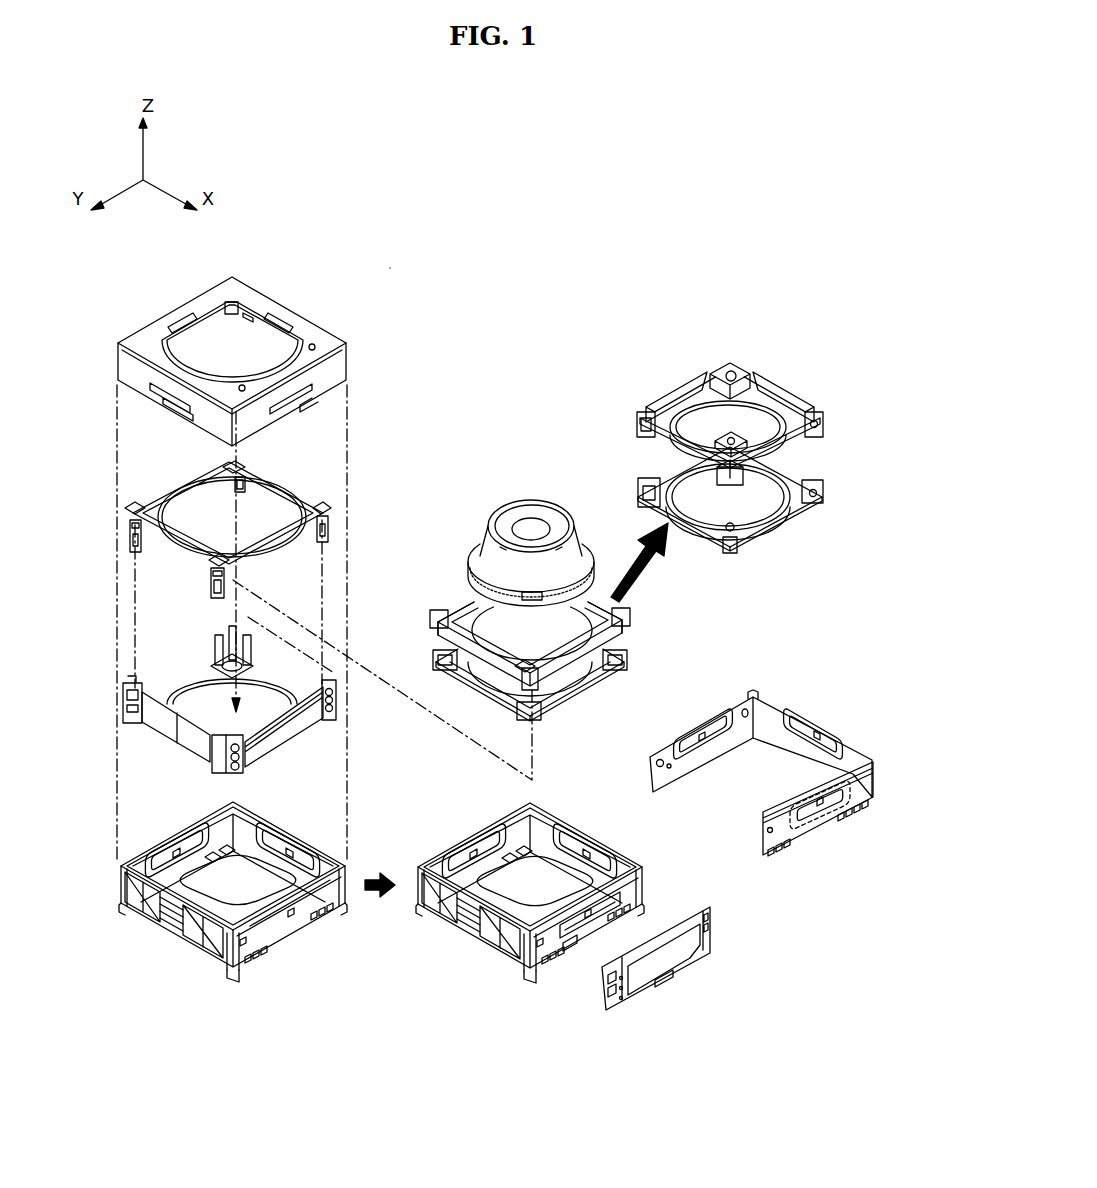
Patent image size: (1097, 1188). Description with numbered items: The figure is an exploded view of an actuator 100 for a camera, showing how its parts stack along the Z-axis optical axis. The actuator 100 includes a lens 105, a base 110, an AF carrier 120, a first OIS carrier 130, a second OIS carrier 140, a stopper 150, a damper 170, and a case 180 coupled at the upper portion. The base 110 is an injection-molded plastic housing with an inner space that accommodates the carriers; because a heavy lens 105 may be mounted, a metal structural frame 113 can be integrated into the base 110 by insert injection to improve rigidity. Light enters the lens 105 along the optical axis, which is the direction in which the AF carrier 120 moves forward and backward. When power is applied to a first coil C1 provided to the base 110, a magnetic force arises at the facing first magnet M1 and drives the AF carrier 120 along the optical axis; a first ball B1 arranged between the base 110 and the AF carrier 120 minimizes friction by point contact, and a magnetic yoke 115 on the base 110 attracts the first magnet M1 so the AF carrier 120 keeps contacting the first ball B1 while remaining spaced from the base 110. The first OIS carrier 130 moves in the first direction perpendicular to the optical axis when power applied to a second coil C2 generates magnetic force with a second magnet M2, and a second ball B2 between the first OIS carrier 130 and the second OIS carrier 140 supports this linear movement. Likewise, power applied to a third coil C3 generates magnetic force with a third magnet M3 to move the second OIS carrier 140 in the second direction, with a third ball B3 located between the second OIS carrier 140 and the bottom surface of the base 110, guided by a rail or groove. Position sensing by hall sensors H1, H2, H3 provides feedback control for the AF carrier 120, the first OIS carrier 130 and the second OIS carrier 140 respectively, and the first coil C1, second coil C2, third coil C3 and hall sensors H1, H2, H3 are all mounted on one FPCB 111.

The actuator 100 is at (388, 270).
The lens 105 is at (530, 513).
The base 110 is at (135, 910).
The FPCB 111 is at (740, 697).
The structural frame 113 is at (628, 997).
The yoke 115 is at (272, 934).
The AF carrier 120 is at (165, 720).
The first OIS carrier 130 is at (450, 610).
The second OIS carrier 140 is at (470, 692).
The stopper 150 is at (160, 497).
The damper 170 is at (130, 511).
The case 180 is at (135, 330).
The first ball B1 is at (222, 768).
The second ball B2 is at (830, 425).
The third ball B3 is at (215, 658).
The first magnet M1 is at (278, 742).
The second magnet M2 is at (465, 603).
The third magnet M3 is at (600, 605).
The first coil C1 is at (808, 835).
The second coil C2 is at (145, 862).
The third coil C3 is at (300, 855).
The hall sensor H1 is at (825, 808).
The hall sensor H2 is at (690, 732).
The hall sensor H3 is at (816, 733).